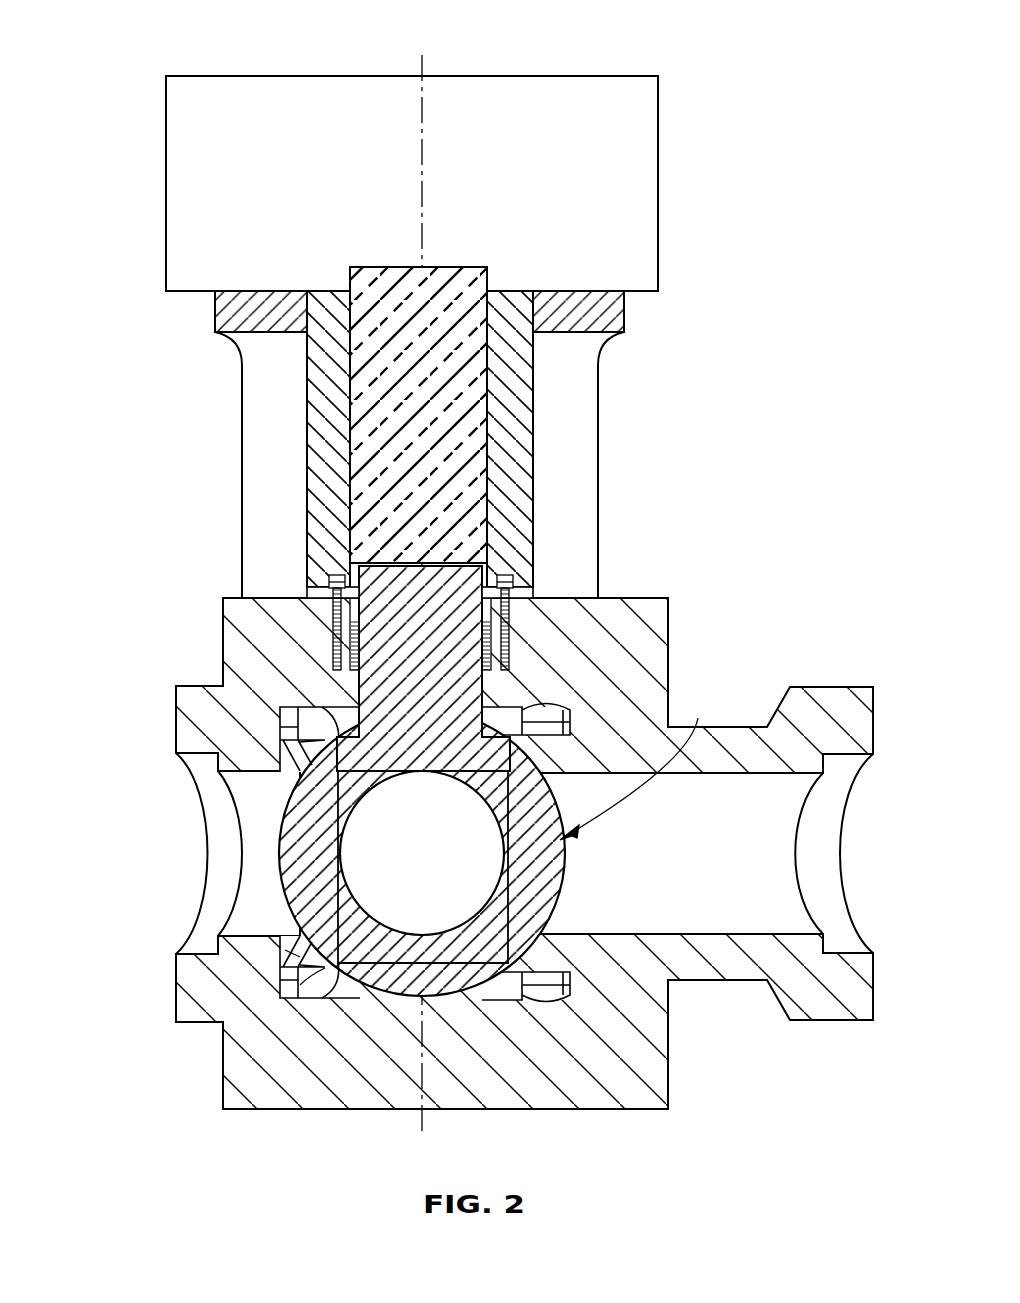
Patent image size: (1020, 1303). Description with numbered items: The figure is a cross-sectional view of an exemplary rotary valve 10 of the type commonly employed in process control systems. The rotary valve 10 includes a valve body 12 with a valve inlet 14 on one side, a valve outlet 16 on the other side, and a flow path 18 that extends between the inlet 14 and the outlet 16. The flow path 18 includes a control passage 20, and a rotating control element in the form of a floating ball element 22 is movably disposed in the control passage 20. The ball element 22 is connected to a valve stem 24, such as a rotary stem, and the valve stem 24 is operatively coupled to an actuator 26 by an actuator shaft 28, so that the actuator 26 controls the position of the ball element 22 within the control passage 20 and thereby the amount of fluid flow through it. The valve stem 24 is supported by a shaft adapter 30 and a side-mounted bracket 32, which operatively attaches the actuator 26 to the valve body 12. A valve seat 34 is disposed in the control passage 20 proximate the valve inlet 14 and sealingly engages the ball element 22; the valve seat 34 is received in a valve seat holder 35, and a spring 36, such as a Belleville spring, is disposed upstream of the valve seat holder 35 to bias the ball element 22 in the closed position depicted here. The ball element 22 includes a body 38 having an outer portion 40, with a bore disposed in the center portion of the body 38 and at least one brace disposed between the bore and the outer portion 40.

The rotary valve 10 is at (474, 606).
The valve body 12 is at (237, 655).
The valve inlet 14 is at (207, 877).
The valve outlet 16 is at (850, 851).
The flow path 18 is at (262, 861).
The control passage 20 is at (472, 920).
The ball element 22 is at (323, 909).
The valve stem 24 is at (482, 692).
The actuator 26 is at (648, 152).
The actuator shaft 28 is at (467, 386).
The shaft adapter 30 is at (527, 537).
The side-mounted bracket 32 is at (575, 470).
The valve seat 34 is at (282, 940).
The valve seat holder 35 is at (312, 985).
The spring 36 is at (283, 945).
The body 38 is at (639, 765).
The outer portion 40 is at (670, 983).